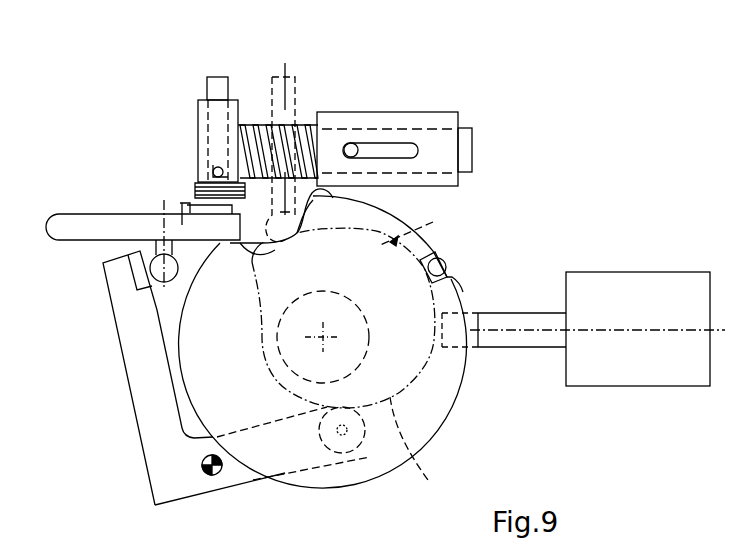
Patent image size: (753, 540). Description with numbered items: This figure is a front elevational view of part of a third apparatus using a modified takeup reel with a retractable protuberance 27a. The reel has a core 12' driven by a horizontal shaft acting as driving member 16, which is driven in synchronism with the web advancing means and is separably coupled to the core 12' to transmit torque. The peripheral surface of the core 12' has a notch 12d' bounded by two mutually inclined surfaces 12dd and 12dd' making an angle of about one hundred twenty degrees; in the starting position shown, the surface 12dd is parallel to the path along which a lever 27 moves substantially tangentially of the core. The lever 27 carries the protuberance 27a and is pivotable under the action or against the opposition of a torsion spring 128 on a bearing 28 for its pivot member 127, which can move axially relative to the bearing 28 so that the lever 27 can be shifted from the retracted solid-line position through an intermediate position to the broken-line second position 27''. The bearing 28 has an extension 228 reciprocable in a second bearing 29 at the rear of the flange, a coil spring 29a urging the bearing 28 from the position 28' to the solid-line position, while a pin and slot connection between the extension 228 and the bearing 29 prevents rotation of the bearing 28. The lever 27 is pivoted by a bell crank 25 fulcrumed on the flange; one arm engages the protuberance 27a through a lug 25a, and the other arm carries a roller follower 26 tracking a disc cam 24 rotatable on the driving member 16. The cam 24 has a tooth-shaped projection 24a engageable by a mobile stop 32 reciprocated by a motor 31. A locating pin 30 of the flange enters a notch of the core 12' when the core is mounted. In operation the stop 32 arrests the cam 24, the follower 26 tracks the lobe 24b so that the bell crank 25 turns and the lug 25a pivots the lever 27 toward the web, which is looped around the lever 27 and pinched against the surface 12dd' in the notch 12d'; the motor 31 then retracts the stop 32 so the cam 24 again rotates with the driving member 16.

The core 12' is at (348, 342).
The driving member 16 is at (297, 350).
The inclined surface 12dd' is at (350, 223).
The inclined surface 12dd is at (239, 265).
The notch 12d' is at (337, 216).
The second position 27'' is at (305, 223).
The disc cam 24 is at (427, 228).
The lobe 24b is at (427, 444).
The locating pin 30 is at (440, 260).
The tooth-shaped projection 24a is at (445, 355).
The mobile stop 32 is at (498, 320).
The motor 31 is at (630, 290).
The roller follower 26 is at (353, 447).
The bell crank 25 is at (165, 477).
The lug 25a is at (137, 270).
The lever 27 is at (136, 223).
The protuberance 27a is at (180, 267).
The bearing 28 is at (189, 133).
The pivot member 127 is at (207, 80).
The torsion spring 128 is at (195, 190).
The coil spring 29a is at (262, 128).
The shifted position of bearing 28' is at (312, 139).
The extension 228 is at (318, 183).
The second bearing 29 is at (418, 122).